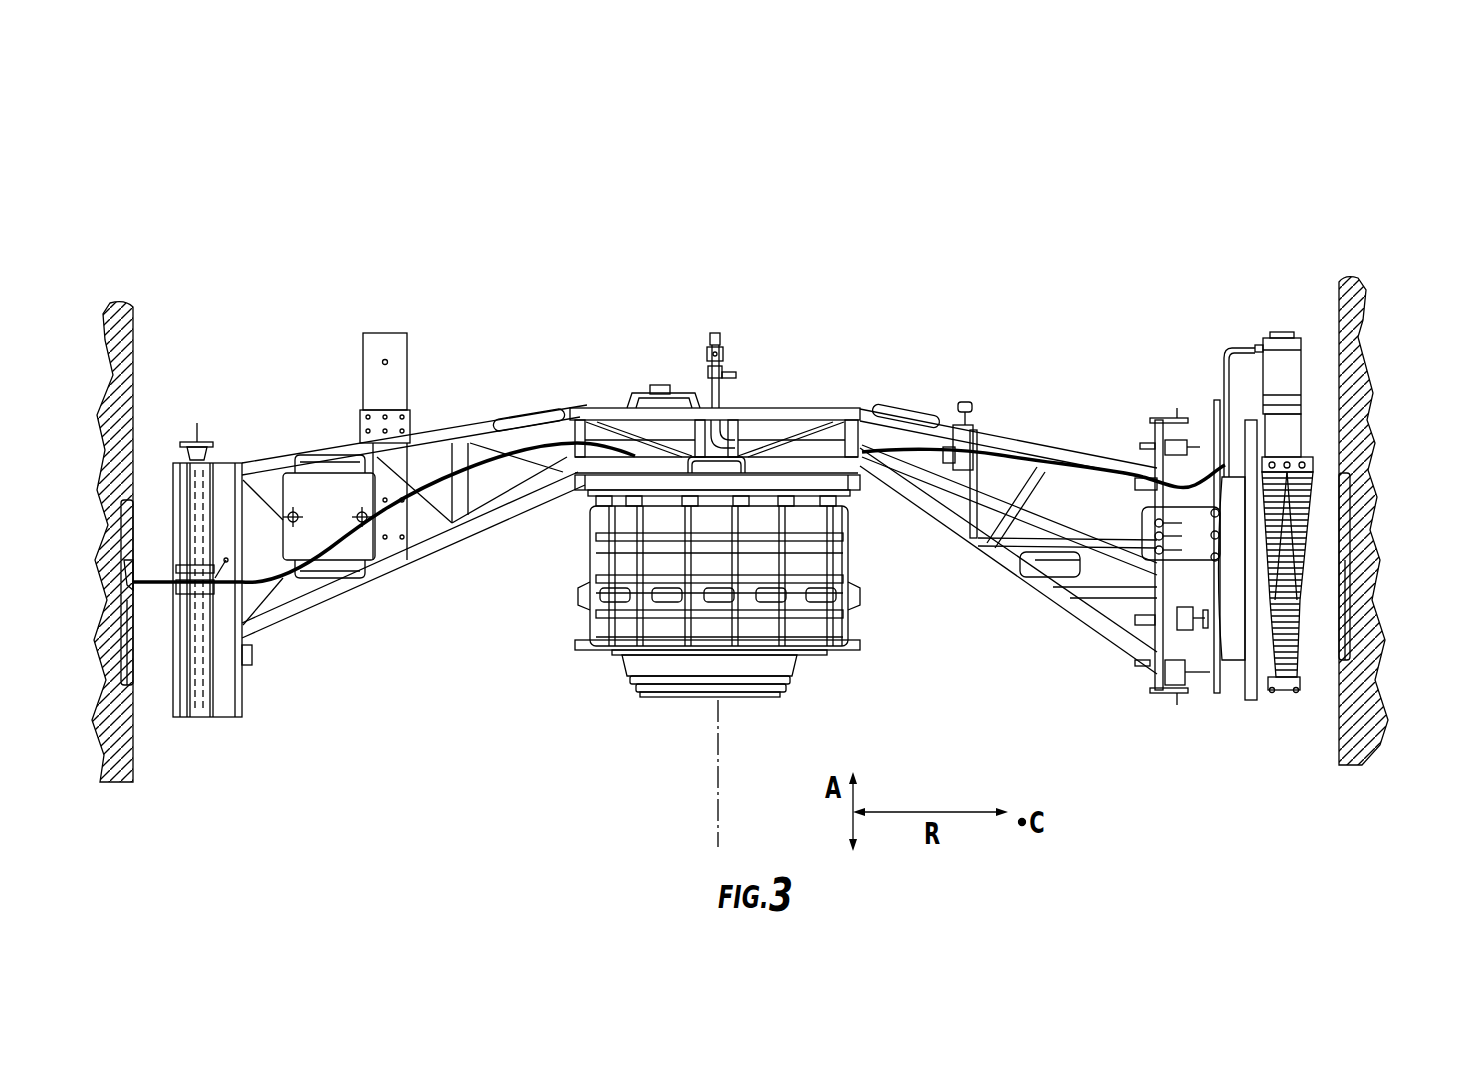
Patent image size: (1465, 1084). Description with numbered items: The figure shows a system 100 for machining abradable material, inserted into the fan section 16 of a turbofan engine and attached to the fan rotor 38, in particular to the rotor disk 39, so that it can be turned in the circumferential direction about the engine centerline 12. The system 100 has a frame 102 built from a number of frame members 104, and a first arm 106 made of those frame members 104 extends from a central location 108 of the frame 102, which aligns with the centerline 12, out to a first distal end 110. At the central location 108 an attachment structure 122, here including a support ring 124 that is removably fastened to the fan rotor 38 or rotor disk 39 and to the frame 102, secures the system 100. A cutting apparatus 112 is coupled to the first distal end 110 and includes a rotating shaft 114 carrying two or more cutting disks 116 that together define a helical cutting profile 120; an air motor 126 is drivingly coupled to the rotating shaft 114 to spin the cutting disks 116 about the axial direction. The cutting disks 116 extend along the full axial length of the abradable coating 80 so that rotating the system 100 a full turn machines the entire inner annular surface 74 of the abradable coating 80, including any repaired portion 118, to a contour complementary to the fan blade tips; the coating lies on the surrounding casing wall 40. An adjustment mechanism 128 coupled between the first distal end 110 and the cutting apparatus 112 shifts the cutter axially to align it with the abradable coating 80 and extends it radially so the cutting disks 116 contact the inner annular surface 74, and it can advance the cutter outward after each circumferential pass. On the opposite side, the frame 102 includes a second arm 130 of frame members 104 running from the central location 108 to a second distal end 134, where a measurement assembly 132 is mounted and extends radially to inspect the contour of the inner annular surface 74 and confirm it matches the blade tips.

The centerline 12 is at (720, 745).
The fan section 16 is at (1270, 172).
The fan rotor 38 is at (548, 580).
The rotor disk 39 is at (850, 548).
The engine casing 40 is at (134, 326).
The inner annular surface 74 is at (134, 522).
The abradable coating 80 is at (130, 640).
The system 100 is at (716, 218).
The frame 102 is at (878, 298).
The frame members 104 is at (496, 504).
The first arm 106 is at (1053, 402).
The central location 108 is at (680, 315).
The first distal end 110 is at (1160, 687).
The cutting apparatus 112 is at (1203, 302).
The rotating shaft 114 is at (1257, 700).
The cutting disks 116 is at (1302, 628).
The repaired portion 118 is at (129, 578).
The helical cutting profile 120 is at (1330, 548).
The attachment structure 122 is at (783, 408).
The support ring 124 is at (862, 490).
The air motor 126 is at (1280, 337).
The adjustment mechanism 128 is at (1196, 720).
The second arm 130 is at (404, 604).
The measurement assembly 132 is at (216, 736).
The second distal end 134 is at (247, 656).